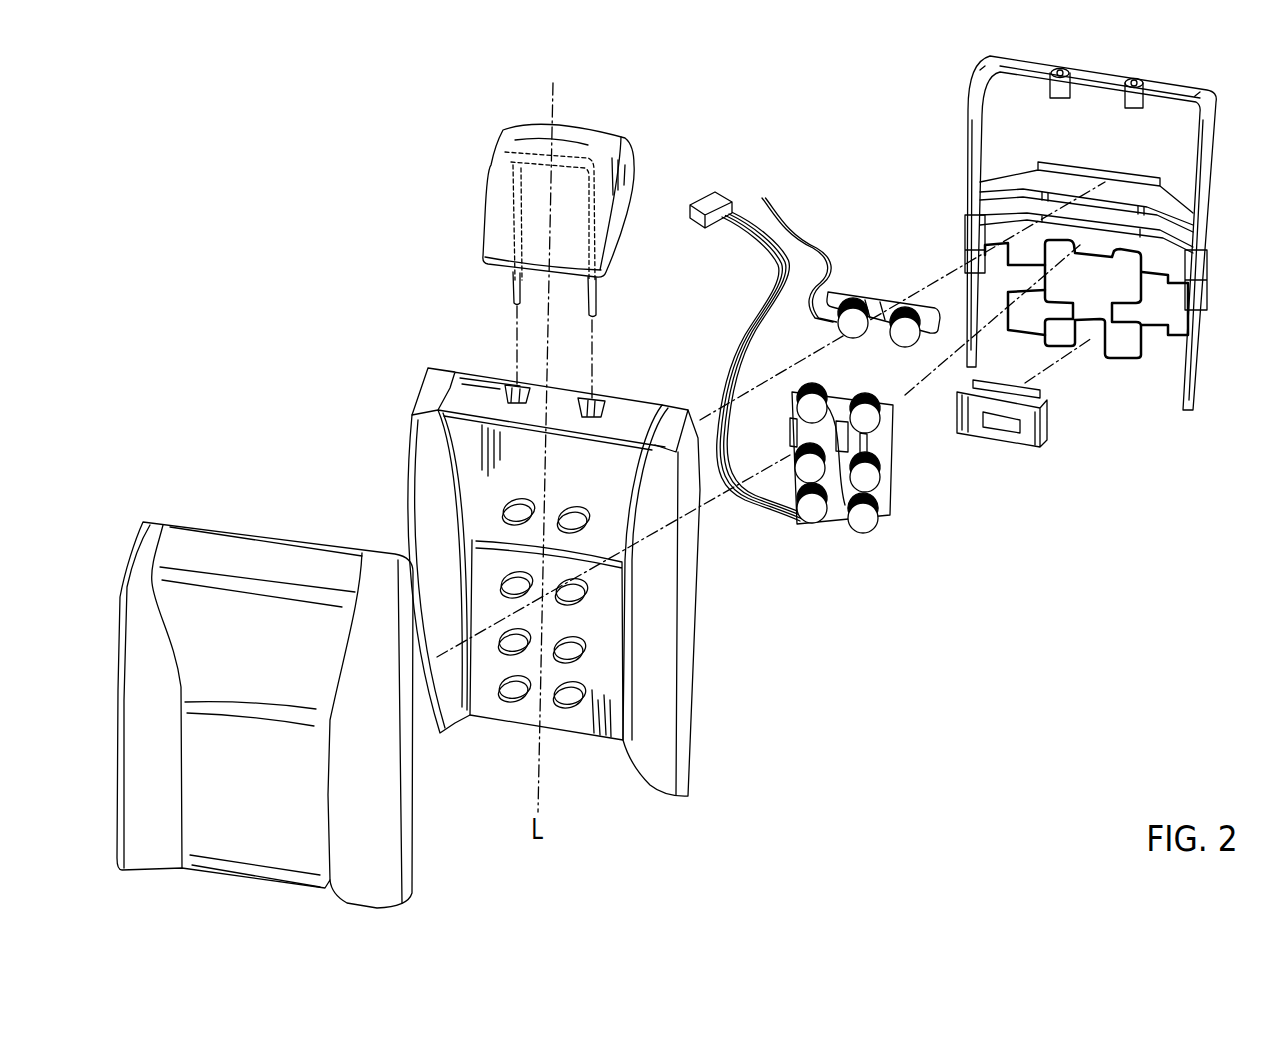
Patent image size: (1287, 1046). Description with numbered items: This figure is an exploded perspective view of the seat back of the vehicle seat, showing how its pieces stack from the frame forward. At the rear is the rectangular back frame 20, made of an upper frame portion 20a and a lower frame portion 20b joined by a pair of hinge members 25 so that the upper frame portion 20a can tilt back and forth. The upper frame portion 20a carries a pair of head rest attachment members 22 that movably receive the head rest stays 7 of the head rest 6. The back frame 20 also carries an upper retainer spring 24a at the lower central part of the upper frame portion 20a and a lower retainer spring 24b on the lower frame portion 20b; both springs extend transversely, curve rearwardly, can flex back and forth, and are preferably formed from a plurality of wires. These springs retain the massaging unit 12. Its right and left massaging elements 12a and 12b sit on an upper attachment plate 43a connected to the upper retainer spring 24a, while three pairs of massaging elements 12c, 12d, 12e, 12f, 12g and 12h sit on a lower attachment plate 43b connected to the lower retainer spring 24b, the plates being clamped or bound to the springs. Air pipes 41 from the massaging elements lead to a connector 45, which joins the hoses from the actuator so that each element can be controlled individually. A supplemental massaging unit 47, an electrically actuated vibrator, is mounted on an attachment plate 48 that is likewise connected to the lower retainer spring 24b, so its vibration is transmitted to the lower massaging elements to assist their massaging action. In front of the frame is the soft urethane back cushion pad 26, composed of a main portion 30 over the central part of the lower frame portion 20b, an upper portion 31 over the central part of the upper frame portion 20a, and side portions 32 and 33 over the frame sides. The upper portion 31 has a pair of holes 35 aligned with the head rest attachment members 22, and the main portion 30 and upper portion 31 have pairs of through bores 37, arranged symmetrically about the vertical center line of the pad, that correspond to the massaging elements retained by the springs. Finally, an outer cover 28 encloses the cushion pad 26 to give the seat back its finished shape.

The head rest 6 is at (566, 197).
The head rest stays 7 is at (597, 297).
The massaging unit 12 is at (846, 421).
The massaging element 12a is at (842, 325).
The massaging element 12b is at (900, 340).
The massaging element 12c is at (814, 403).
The massaging element 12d is at (878, 420).
The massaging element 12e is at (795, 466).
The massaging element 12f is at (870, 478).
The massaging element 12g is at (810, 512).
The massaging element 12h is at (863, 522).
The back frame 20 is at (1076, 241).
The upper frame portion 20a is at (1217, 110).
The lower frame portion 20b is at (1192, 354).
The head rest attachment members 22 is at (1130, 108).
The upper retainer spring 24a is at (1058, 162).
The lower retainer spring 24b is at (1153, 333).
The hinge members 25 is at (965, 230).
The back cushion pad 26 is at (537, 533).
The outer cover 28 is at (203, 540).
The main portion 30 is at (587, 727).
The upper portion 31 is at (638, 412).
The side portion 32 is at (407, 493).
The side portion 33 is at (667, 660).
The holes 35 is at (588, 388).
The through bores 37 is at (582, 508).
The air pipes 41 is at (815, 243).
The upper attachment plate 43a is at (853, 314).
The lower attachment plate 43b is at (846, 477).
The connector 45 is at (716, 192).
The supplemental massaging unit 47 is at (1040, 397).
The attachment plate 48 is at (1042, 440).